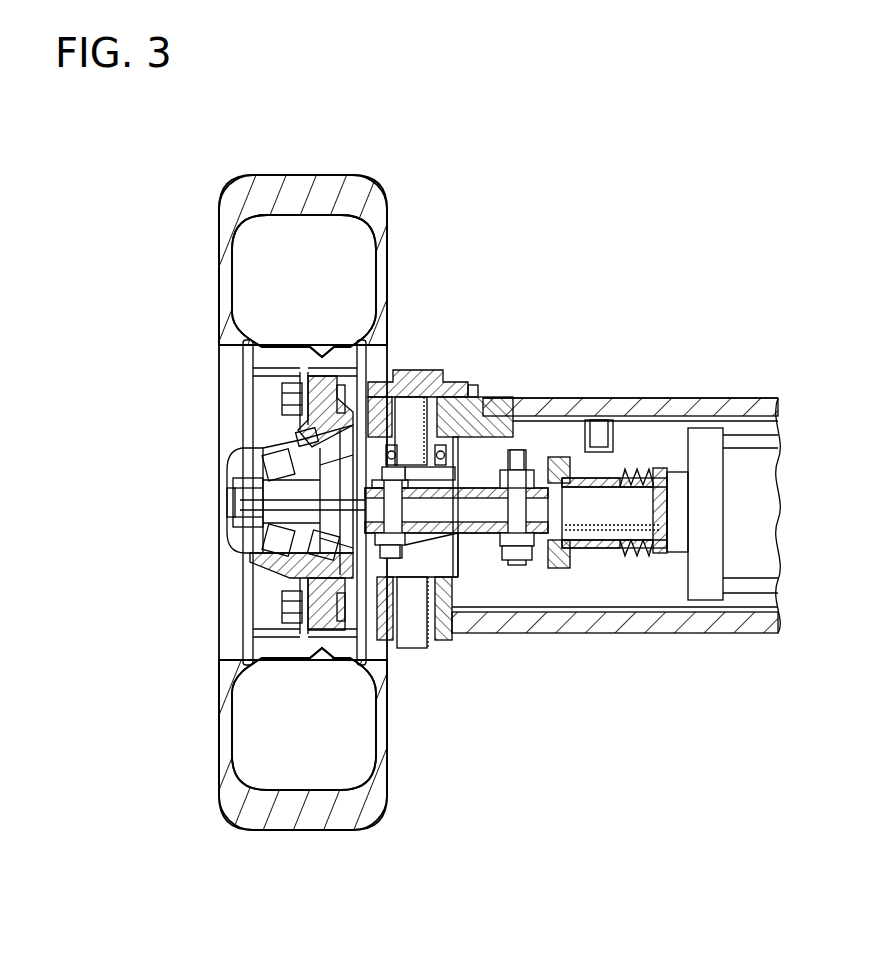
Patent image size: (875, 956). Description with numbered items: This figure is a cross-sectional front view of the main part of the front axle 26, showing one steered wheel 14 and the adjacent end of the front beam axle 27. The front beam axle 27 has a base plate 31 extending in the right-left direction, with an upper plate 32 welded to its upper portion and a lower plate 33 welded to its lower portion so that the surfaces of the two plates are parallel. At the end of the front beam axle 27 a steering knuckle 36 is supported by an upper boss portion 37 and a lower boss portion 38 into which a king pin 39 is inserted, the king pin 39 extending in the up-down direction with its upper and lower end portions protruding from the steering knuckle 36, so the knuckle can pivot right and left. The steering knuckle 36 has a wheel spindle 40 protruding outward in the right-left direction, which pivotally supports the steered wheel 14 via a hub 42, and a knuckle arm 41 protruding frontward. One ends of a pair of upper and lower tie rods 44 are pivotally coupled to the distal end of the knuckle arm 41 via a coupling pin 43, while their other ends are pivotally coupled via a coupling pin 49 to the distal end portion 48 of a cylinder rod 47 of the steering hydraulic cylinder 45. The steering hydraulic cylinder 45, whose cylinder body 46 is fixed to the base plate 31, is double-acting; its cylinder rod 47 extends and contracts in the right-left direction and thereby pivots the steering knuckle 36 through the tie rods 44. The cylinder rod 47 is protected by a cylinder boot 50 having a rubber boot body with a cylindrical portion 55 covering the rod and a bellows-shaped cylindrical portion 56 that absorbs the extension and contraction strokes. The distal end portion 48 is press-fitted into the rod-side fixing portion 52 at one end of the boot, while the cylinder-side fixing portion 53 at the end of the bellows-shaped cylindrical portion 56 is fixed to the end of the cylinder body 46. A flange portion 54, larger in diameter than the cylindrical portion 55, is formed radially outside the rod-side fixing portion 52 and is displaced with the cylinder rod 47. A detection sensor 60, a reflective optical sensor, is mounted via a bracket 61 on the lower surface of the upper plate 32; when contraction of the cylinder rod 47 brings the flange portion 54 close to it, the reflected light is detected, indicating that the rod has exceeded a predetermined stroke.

The steered wheel 14 is at (305, 177).
The front axle 26 is at (761, 258).
The front beam axle 27 is at (764, 397).
The base plate 31 is at (770, 625).
The upper plate 32 is at (730, 398).
The lower plate 33 is at (735, 633).
The steering knuckle 36 is at (458, 570).
The upper boss portion 37 is at (540, 398).
The lower boss portion 38 is at (455, 615).
The king pin 39 is at (416, 650).
The wheel spindle 40 is at (300, 485).
The knuckle arm 41 is at (476, 390).
The hub 42 is at (298, 548).
The coupling pin 43 is at (228, 503).
The tie rods 44 is at (447, 493).
The steering hydraulic cylinder 45 is at (760, 493).
The cylinder body 46 is at (760, 537).
The cylinder rod 47 is at (648, 556).
The distal end portion 48 is at (587, 548).
The coupling pin 49 is at (521, 495).
The cylinder boot 50 is at (578, 466).
The rod-side fixing portion 52 is at (555, 568).
The cylinder-side fixing portion 53 is at (666, 468).
The flange portion 54 is at (576, 568).
The cylindrical portion 55 is at (605, 548).
The bellows-shaped cylindrical portion 56 is at (650, 398).
The detection sensor 60 is at (598, 420).
The bracket 61 is at (627, 398).